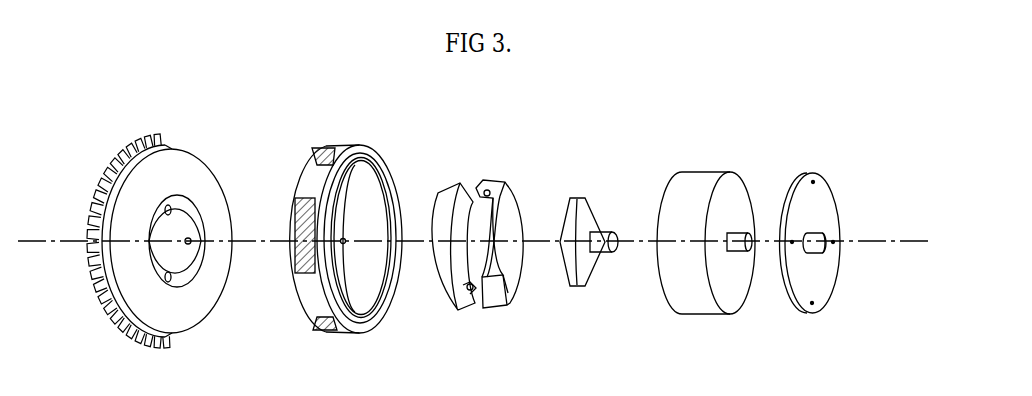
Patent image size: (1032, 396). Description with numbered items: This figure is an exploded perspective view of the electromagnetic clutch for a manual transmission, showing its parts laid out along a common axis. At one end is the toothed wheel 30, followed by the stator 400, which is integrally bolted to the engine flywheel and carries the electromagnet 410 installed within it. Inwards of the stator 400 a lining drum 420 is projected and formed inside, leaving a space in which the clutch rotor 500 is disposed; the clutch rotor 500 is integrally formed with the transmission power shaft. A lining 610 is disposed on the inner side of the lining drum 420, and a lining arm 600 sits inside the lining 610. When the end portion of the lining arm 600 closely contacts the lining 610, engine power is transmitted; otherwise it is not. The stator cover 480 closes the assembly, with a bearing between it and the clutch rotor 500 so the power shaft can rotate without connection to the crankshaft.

The driven gear 30 is at (172, 167).
The stator 400 is at (347, 144).
The electromagnet 410 is at (333, 143).
The lining drum 420 is at (368, 187).
The lining 610 is at (483, 183).
The lining arm 600 is at (585, 203).
The clutch rotor 500 is at (698, 182).
The stator cover 480 is at (820, 192).